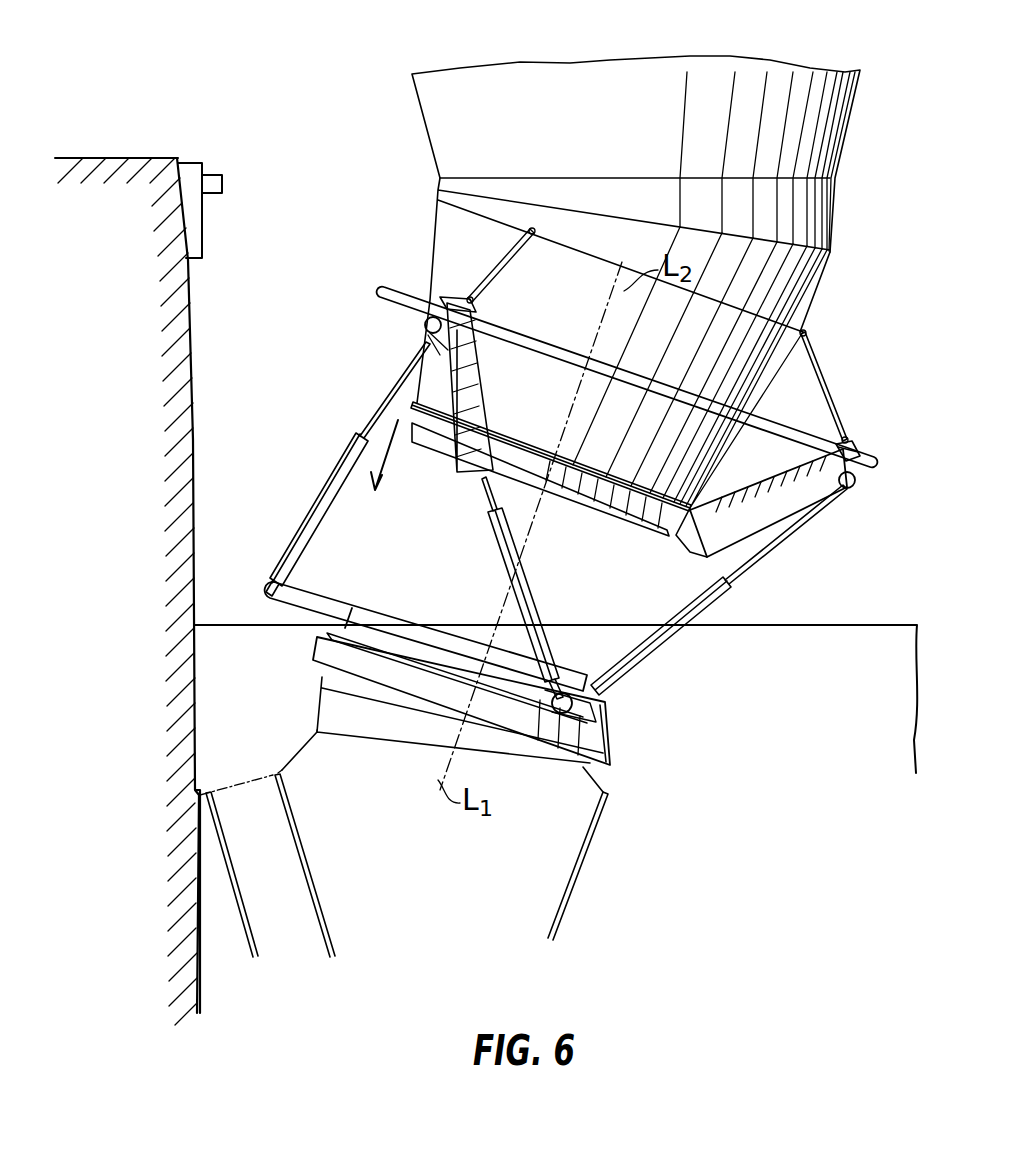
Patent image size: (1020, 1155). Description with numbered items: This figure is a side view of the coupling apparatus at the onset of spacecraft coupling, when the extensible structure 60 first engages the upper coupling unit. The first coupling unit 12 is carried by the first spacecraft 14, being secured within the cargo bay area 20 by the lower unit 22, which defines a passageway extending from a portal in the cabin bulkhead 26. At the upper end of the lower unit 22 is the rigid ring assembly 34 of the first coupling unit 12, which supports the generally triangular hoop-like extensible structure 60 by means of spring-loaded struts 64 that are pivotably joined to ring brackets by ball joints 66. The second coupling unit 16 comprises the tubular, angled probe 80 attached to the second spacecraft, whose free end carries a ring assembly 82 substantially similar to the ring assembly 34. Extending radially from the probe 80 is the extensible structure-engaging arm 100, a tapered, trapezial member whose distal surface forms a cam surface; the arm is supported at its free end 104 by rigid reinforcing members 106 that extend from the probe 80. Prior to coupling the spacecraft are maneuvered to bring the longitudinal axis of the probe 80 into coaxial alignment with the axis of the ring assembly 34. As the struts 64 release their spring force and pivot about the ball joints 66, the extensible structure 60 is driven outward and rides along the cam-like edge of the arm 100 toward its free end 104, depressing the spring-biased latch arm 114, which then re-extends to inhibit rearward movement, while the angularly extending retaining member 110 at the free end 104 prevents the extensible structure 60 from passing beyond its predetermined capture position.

The first coupling unit 12 is at (673, 706).
The first spacecraft 14 is at (142, 561).
The second coupling unit 16 is at (847, 257).
The cargo bay area 20 is at (277, 197).
The lower unit 22 is at (455, 887).
The cabin bulkhead 26 is at (192, 334).
The ring assembly 34 is at (386, 633).
The extensible structure 60 is at (389, 289).
The struts 64 is at (658, 655).
The ball joint 66 is at (600, 723).
The probe 80 is at (700, 347).
The ring assembly 82 is at (581, 494).
The extensible structure-engaging arm 100 is at (766, 522).
The free end 104 is at (845, 440).
The reinforcing member 106 is at (817, 358).
The retaining member 110 is at (450, 296).
The latch arm 114 is at (425, 349).